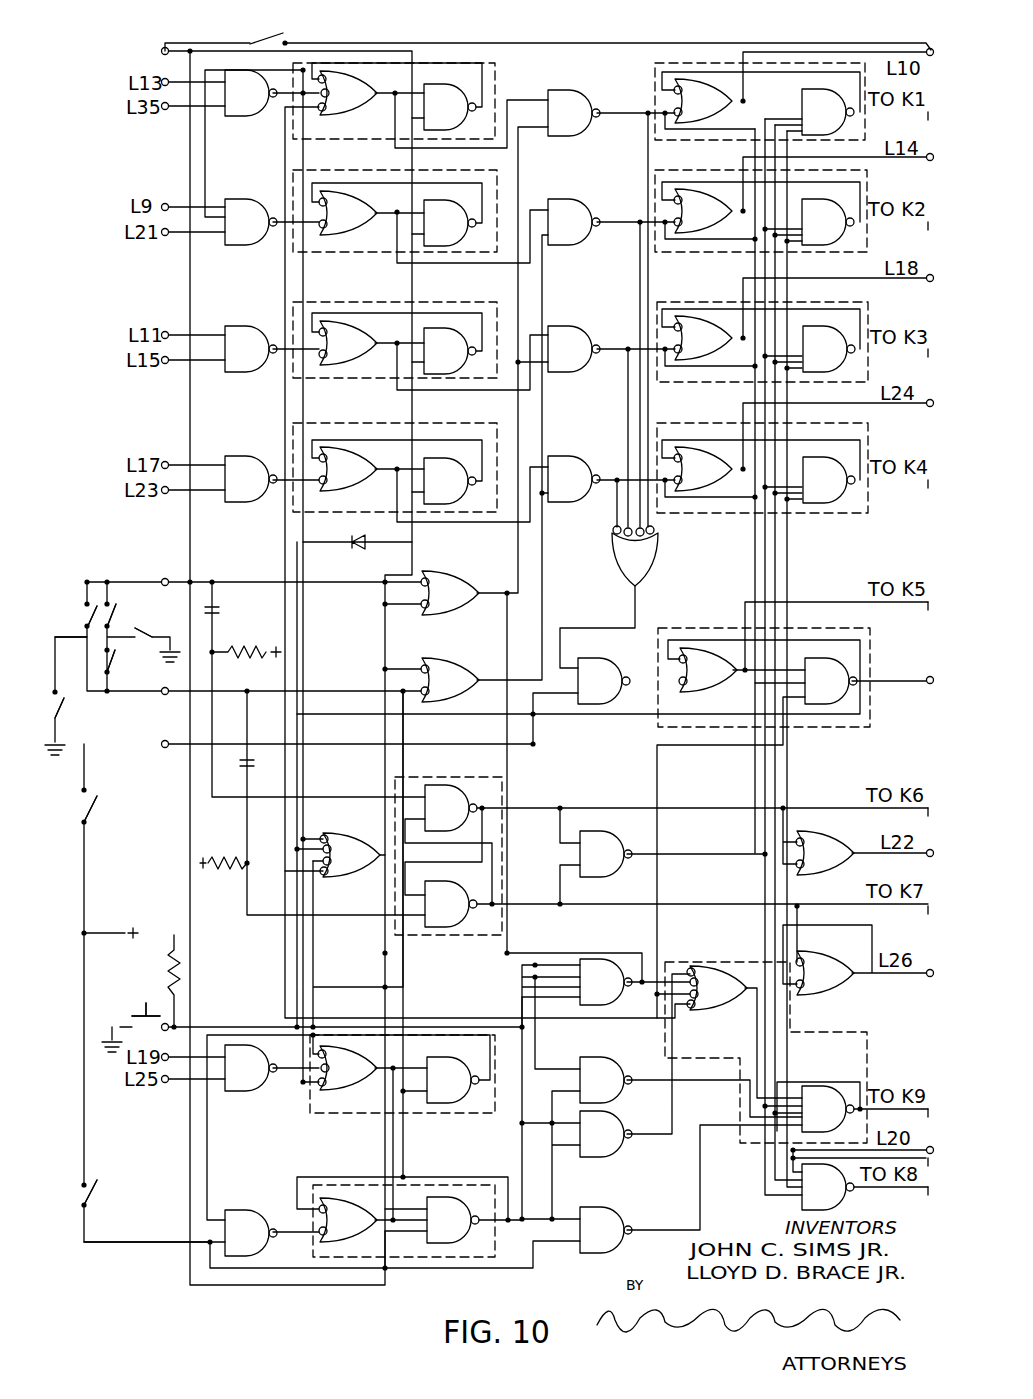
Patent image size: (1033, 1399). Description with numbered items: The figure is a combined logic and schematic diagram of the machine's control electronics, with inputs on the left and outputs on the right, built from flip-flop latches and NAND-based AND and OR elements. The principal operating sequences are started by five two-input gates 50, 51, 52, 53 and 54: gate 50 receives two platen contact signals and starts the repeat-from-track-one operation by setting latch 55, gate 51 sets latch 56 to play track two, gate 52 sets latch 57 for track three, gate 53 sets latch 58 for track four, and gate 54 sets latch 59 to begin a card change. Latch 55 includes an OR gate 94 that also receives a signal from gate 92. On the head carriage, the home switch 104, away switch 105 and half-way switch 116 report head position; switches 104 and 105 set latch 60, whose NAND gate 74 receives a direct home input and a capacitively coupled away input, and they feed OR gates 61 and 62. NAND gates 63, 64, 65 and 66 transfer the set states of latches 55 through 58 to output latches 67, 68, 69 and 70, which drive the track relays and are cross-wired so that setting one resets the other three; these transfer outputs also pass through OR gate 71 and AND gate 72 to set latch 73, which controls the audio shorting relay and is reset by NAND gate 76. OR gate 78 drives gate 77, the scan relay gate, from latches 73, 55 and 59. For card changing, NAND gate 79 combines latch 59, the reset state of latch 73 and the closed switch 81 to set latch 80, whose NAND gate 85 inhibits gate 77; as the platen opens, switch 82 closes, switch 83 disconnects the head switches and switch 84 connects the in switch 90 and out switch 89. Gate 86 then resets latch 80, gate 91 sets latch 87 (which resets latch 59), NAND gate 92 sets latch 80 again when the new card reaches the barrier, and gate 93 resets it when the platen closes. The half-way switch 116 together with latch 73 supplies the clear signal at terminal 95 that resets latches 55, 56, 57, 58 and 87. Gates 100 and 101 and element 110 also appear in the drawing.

The half-way switch 116 is at (262, 38).
The clear terminal 95 is at (176, 54).
The AND gate (repeat from track 1 gate) 50 is at (245, 118).
The AND gate (track 2 gate) 51 is at (245, 246).
The AND gate (track 3 gate) 52 is at (245, 373).
The AND gate (track 4 gate) 53 is at (245, 503).
The AND gate (card change gate) 54 is at (252, 1080).
The latch (track 1) 55 is at (488, 66).
The latch (track 2) 56 is at (497, 178).
The latch (track 3) 57 is at (497, 304).
The latch (track 4) 58 is at (497, 436).
The latch (card change latch) 59 is at (352, 1114).
The latch (home/away latch) 60 is at (482, 780).
The OR gate 61 is at (445, 671).
The OR gate 62 is at (455, 584).
The NAND gate 63 is at (585, 97).
The NAND gate 64 is at (585, 207).
The NAND gate 65 is at (585, 334).
The NAND gate 66 is at (585, 464).
The output latch (track 1 relay latch) 67 is at (700, 143).
The output latch (track 2 relay latch) 68 is at (718, 254).
The output latch (track 3 relay latch) 69 is at (718, 382).
The output latch (track 4 relay latch) 70 is at (732, 516).
The logical OR gate 71 is at (652, 562).
The AND gate 72 is at (611, 667).
The latch (audio/K5 latch) 73 is at (792, 677).
The NAND gate of latch 60 74 is at (466, 912).
The NAND gate 76 is at (612, 837).
The gate (scan relay gate) 77 is at (848, 1200).
The OR gate 78 is at (372, 842).
The NAND gate 79 is at (621, 990).
The latch (platen latch) 80 is at (867, 1032).
The closed switch 81 is at (92, 809).
The switch contact (open switch) 82 is at (94, 1186).
The switch 83 is at (184, 1240).
The switch contact 84 is at (74, 713).
The NAND gate of latch 80 85 is at (810, 1090).
The gate 86 is at (624, 1215).
The latch 87 is at (458, 1185).
The out switch 89 is at (71, 652).
The in switch 90 is at (84, 617).
The gate 91 is at (243, 1210).
The NAND gate 92 is at (625, 1150).
The gate 93 is at (624, 1067).
The OR gate of latch 55 94 is at (372, 112).
The NOR gate 100 is at (812, 834).
The NOR gate 101 is at (840, 984).
The home switch 104 is at (129, 614).
The away switch 105 is at (126, 658).
The push button switch 110 is at (146, 1013).